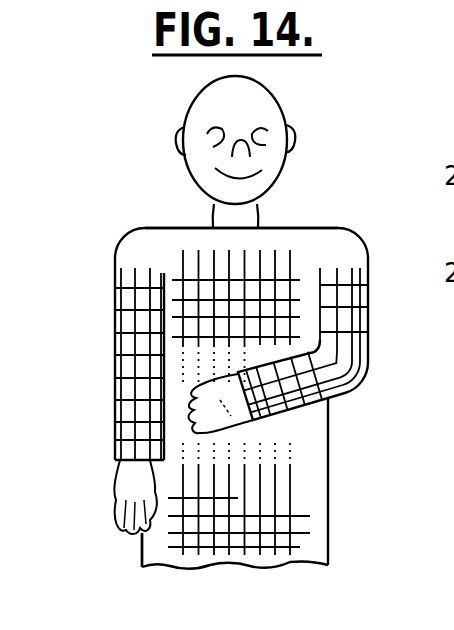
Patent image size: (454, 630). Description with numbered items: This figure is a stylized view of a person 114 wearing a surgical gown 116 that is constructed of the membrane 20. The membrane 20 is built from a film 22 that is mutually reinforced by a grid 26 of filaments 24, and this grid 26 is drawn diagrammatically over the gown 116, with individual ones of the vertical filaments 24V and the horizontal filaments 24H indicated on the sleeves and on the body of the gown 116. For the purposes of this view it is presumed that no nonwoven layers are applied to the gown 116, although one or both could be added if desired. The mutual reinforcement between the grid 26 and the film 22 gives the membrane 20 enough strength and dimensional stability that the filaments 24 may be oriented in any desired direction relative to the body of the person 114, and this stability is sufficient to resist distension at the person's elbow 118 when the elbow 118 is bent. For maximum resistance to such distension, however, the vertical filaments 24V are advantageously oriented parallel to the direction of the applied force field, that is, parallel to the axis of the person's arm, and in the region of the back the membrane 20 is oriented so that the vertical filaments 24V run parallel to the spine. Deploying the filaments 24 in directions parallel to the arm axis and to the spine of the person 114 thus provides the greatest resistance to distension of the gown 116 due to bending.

The person 114 is at (186, 110).
The gown 116 is at (312, 228).
The elbow 118 is at (360, 388).
The membrane 20 is at (330, 475).
The film 22 is at (160, 538).
The filaments 24 is at (352, 302).
The horizontal filaments 24H is at (128, 353).
The vertical filaments 24V is at (133, 430).
The grid 26 is at (193, 556).